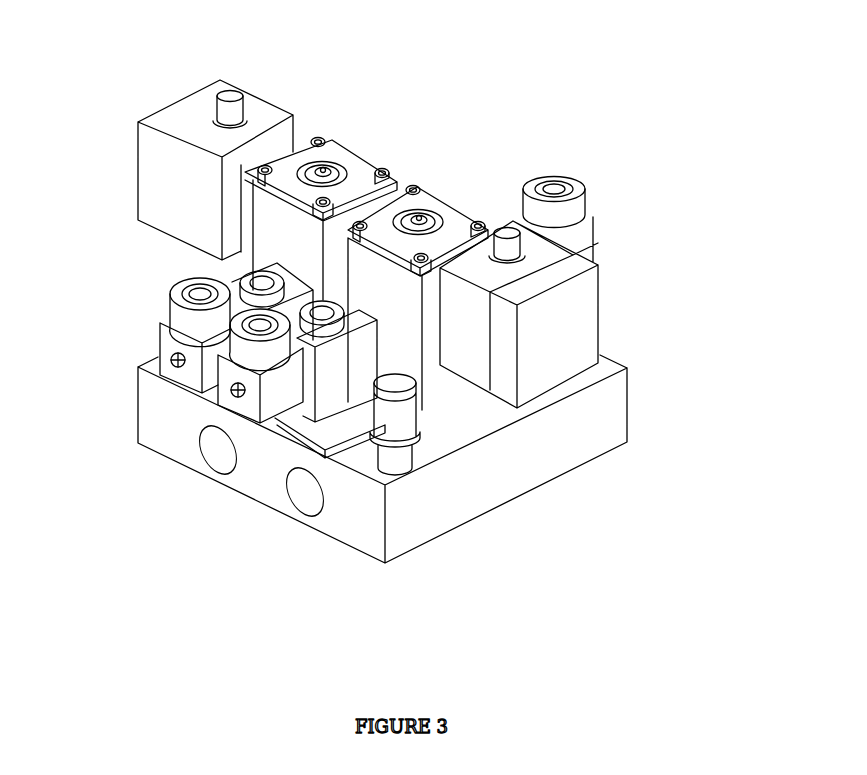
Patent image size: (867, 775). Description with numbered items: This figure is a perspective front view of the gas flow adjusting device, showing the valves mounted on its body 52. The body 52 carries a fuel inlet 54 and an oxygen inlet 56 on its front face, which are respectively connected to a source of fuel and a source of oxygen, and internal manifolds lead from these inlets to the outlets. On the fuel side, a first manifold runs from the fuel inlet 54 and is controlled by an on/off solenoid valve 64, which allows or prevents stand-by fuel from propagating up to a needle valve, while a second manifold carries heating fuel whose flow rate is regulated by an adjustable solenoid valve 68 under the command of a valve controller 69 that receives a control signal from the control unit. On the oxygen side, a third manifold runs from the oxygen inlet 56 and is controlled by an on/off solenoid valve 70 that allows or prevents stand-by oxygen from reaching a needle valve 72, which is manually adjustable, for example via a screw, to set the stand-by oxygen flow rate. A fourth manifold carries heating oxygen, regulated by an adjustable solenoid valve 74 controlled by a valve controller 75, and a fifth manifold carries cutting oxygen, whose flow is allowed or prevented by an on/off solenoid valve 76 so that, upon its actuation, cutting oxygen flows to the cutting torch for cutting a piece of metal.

The body 52 is at (528, 453).
The fuel inlet 54 is at (212, 447).
The oxygen inlet 56 is at (308, 500).
The on/off solenoid valve 64 is at (210, 277).
The adjustable solenoid valve 68 is at (347, 160).
The valve controller 69 is at (270, 120).
The on/off solenoid valve 70 is at (205, 377).
The needle valve 72 is at (392, 460).
The adjustable solenoid valve 74 is at (443, 208).
The valve controller 75 is at (545, 253).
The on/off solenoid valve 76 is at (593, 224).